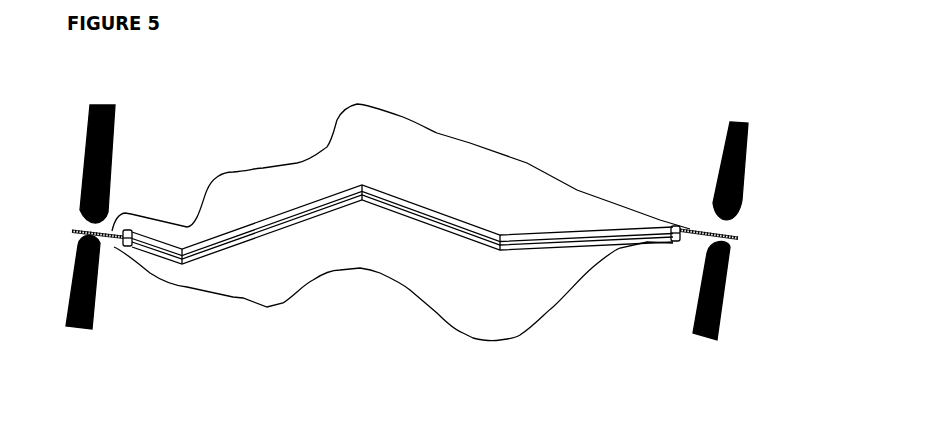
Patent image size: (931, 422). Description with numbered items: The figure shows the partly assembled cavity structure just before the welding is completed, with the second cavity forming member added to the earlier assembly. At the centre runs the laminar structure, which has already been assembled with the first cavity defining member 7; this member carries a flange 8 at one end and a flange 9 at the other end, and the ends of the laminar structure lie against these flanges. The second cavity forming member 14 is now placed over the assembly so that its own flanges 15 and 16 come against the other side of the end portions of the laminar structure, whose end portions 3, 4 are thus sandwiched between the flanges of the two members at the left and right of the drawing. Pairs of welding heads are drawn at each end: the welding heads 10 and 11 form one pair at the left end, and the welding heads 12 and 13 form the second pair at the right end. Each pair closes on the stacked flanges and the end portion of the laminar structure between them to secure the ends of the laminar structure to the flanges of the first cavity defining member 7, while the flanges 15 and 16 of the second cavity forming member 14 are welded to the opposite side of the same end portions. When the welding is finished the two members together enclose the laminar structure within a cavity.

The first strip 3 is at (75, 236).
The second strip 4 is at (736, 251).
The first cavity defining member 7 is at (498, 349).
The flange 8 is at (110, 243).
The flange 9 is at (695, 242).
The welding head 10 is at (116, 137).
The welding head 11 is at (101, 328).
The welding head 12 is at (753, 151).
The welding head 13 is at (699, 344).
The second cavity forming member 14 is at (509, 151).
The flange 15 is at (78, 222).
The flange 16 is at (736, 232).